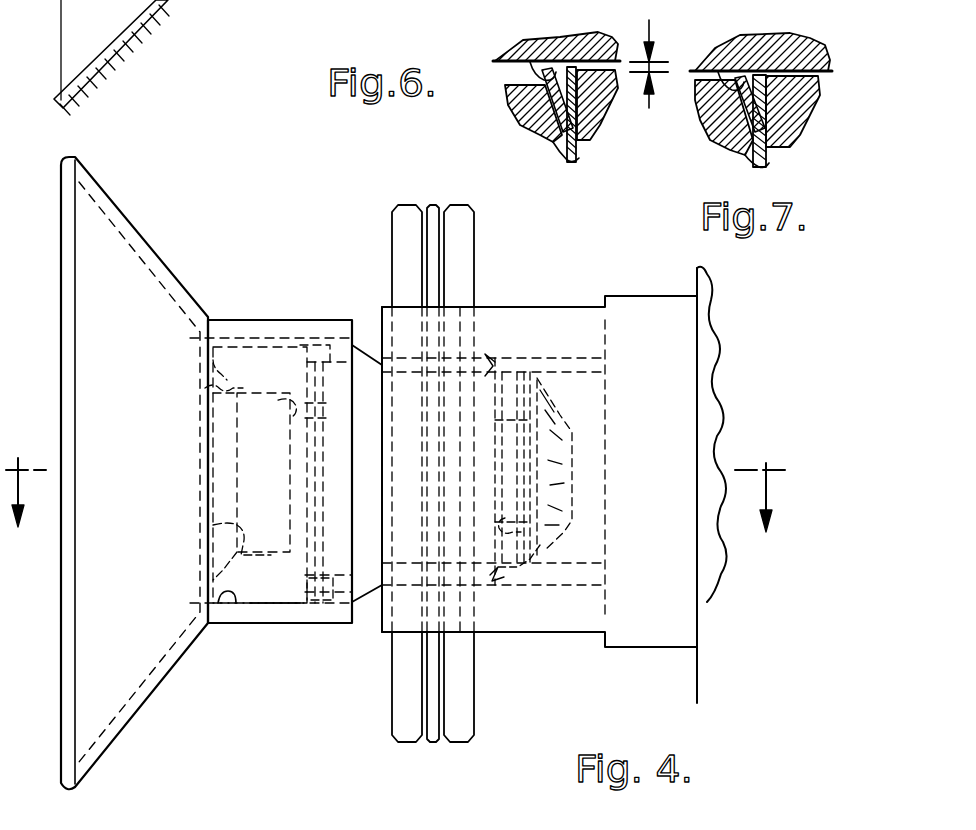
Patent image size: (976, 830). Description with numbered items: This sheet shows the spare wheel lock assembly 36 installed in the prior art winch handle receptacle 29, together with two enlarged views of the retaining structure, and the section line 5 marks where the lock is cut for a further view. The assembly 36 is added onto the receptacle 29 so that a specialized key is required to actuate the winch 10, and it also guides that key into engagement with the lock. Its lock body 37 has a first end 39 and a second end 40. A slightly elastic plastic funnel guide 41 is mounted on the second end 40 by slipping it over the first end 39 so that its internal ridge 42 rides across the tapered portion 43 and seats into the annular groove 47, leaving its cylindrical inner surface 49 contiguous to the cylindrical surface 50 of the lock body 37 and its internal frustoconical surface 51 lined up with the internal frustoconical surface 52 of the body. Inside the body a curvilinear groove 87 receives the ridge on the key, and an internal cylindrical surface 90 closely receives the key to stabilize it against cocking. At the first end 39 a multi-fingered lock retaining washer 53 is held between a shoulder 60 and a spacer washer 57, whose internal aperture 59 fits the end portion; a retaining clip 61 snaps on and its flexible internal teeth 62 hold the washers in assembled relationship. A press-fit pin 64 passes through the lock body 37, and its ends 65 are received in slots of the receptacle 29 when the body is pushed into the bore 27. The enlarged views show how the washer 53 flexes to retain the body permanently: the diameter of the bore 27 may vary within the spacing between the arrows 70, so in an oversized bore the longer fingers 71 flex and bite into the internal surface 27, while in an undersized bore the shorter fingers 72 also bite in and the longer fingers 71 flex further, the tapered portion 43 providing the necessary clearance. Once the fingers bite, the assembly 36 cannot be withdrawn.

In FIG. 4, the section line 5- 5 is at (398, 477).
In FIG. 4, the winch 10 is at (698, 276).
In FIG. 4, the bore 27 is at (594, 370).
In FIG. 6, the bore 27 is at (589, 42).
In FIG. 7, the bore 27 is at (832, 72).
In FIG. 4, the winch handle receptacle 29 is at (554, 306).
In FIG. 4, the spare wheel lock assembly 36 is at (285, 228).
In FIG. 4, the lock body 37 is at (358, 346).
In FIG. 4, the first end 39 is at (576, 462).
In FIG. 4, the second end 40 is at (236, 324).
In FIG. 4, the funnel guide 41 is at (137, 221).
In FIG. 4, the internal ridge 42 is at (316, 342).
In FIG. 6, the tapered portion 43 is at (511, 89).
In FIG. 7, the tapered portion 43 is at (698, 88).
In FIG. 4, the annular groove 47 is at (328, 604).
In FIG. 4, the cylindrical inner surface 49 is at (228, 607).
In FIG. 4, the cylindrical surface 50 is at (264, 610).
In FIG. 4, the internal frustoconical surface 51 is at (142, 272).
In FIG. 4, the internal frustoconical surface 52 is at (203, 387).
In FIG. 6, the multi-fingered lock retaining washer 53 is at (566, 158).
In FIG. 7, the multi-fingered lock retaining washer 53 is at (750, 158).
In FIG. 4, the spacer washer 57 is at (517, 590).
In FIG. 6, the spacer washer 57 is at (594, 113).
In FIG. 7, the spacer washer 57 is at (788, 106).
In FIG. 4, the internal aperture 59 is at (542, 536).
In FIG. 6, the shoulder 60 is at (581, 144).
In FIG. 7, the shoulder 60 is at (772, 152).
In FIG. 4, the retaining clip 61 is at (540, 564).
In FIG. 4, the flexible internal teeth 62 is at (576, 445).
In FIG. 4, the pin 64 is at (391, 226).
In FIG. 4, the pin ends 65 is at (474, 226).
In FIG. 6, the arrows 70 is at (662, 106).
In FIG. 6, the longer fingers 71 is at (534, 56).
In FIG. 7, the longer fingers 71 is at (728, 74).
In FIG. 6, the shorter fingers 72 is at (570, 40).
In FIG. 7, the shorter fingers 72 is at (754, 38).
In FIG. 4, the curvilinear groove 87 is at (292, 406).
In FIG. 4, the internal cylindrical surface 90 is at (219, 530).